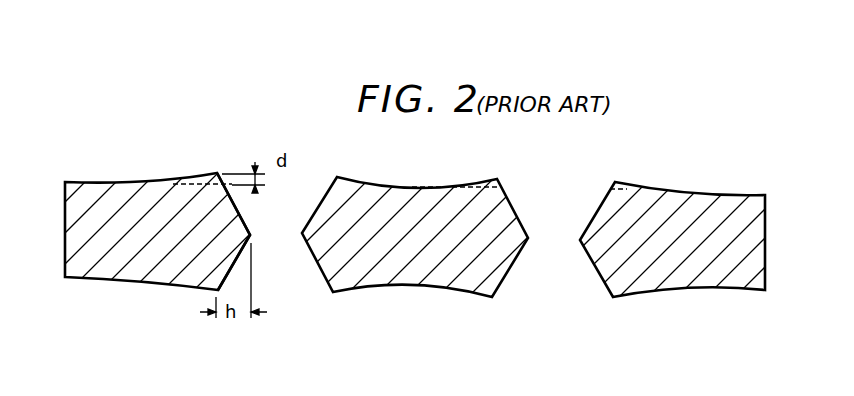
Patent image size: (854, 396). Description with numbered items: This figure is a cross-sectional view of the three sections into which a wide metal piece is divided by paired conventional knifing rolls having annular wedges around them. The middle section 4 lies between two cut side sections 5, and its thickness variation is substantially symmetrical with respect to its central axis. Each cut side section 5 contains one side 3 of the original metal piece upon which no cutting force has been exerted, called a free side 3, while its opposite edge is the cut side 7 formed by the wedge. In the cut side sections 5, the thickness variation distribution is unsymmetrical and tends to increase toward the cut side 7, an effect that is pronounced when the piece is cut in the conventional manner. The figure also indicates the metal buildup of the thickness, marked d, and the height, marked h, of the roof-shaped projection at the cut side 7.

The free side 3 is at (64, 181).
The middle section 4 is at (435, 202).
The cut side section 5 is at (145, 200).
The cut side 7 is at (243, 212).